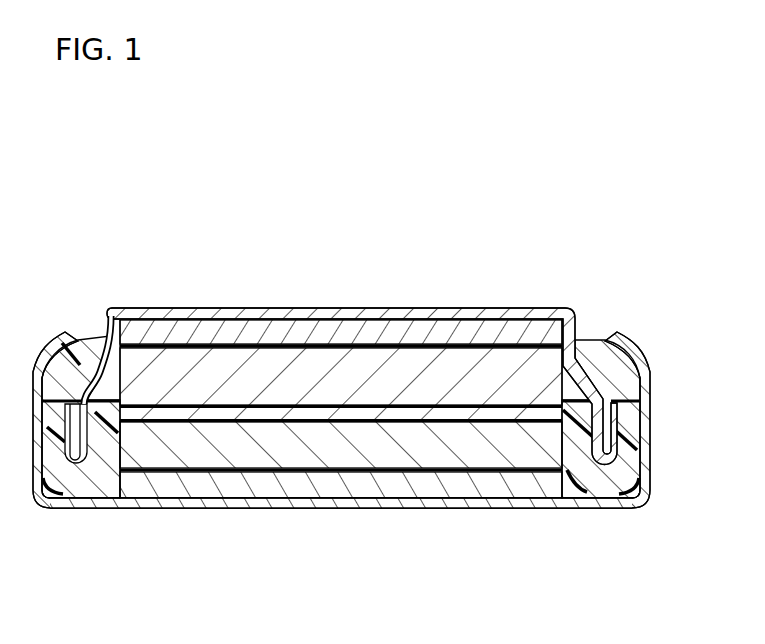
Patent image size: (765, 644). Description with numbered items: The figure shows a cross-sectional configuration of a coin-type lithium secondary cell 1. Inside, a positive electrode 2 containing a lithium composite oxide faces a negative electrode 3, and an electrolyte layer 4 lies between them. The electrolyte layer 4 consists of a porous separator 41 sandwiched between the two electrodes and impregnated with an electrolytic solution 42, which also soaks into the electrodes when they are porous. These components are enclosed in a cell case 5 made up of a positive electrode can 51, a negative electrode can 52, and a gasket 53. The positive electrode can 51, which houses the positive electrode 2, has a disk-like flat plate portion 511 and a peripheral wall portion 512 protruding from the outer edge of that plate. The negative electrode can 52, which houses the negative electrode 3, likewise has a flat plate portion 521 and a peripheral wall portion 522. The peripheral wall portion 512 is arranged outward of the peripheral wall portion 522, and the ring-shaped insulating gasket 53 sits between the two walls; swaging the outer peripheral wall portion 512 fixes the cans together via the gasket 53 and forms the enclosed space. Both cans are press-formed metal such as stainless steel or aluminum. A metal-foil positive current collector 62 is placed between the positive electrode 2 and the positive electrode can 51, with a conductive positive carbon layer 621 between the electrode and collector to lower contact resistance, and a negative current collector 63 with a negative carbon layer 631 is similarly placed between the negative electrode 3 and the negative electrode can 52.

The coin-type lithium secondary cell 1 is at (258, 219).
The positive electrode 2 is at (425, 455).
The negative electrode 3 is at (293, 349).
The electrolyte layer 4 is at (202, 567).
The separator 41 is at (268, 412).
The electrolytic solution 42 is at (219, 420).
The cell case 5 is at (642, 350).
The positive electrode can 51 is at (666, 538).
The flat plate portion 511 is at (533, 503).
The peripheral wall portion 512 is at (647, 447).
The negative electrode can 52 is at (80, 270).
The flat plate portion 521 is at (222, 317).
The peripheral wall portion 522 is at (104, 358).
The gasket 53 is at (93, 485).
The positive current collector 62 is at (316, 483).
The positive carbon layer 621 is at (377, 472).
The negative current collector 63 is at (404, 332).
The negative carbon layer 631 is at (347, 346).